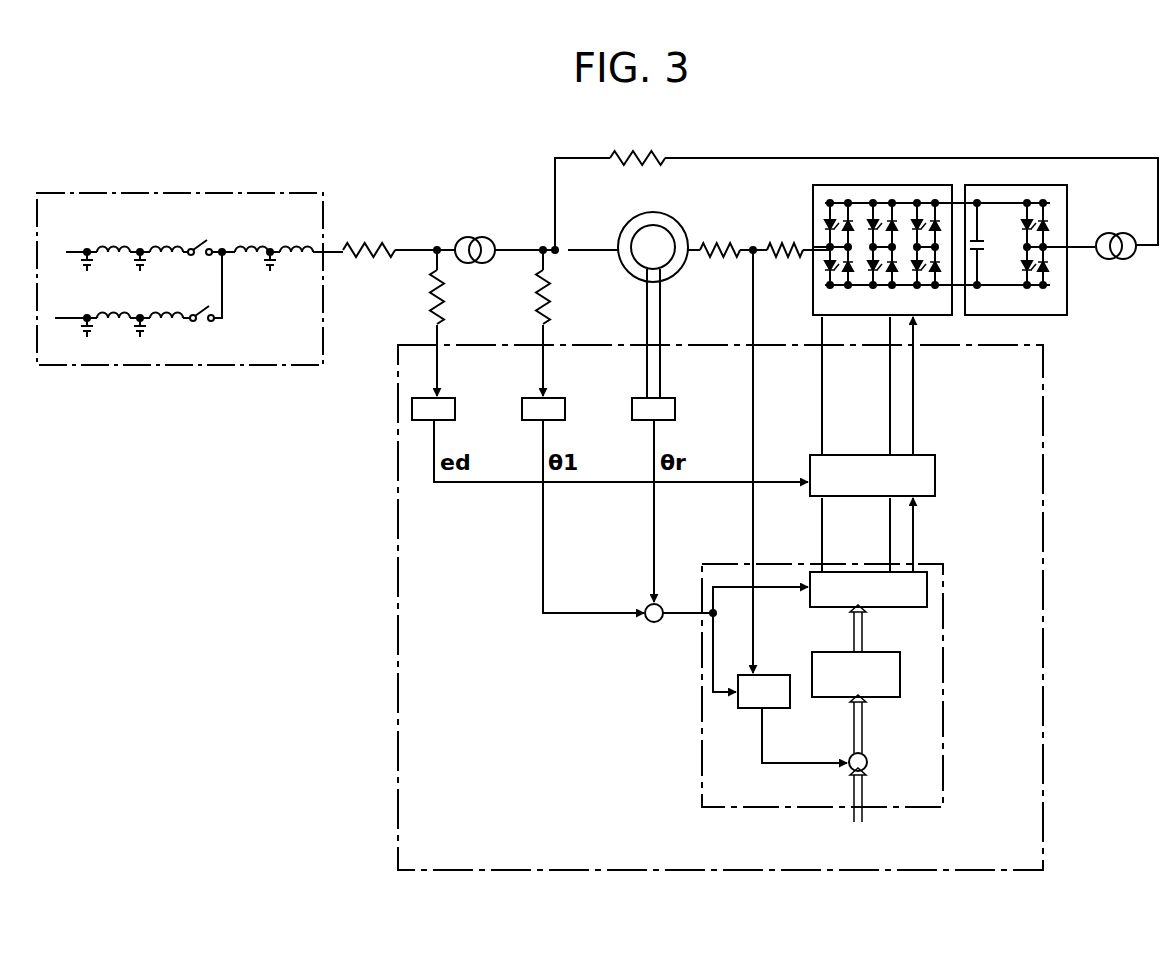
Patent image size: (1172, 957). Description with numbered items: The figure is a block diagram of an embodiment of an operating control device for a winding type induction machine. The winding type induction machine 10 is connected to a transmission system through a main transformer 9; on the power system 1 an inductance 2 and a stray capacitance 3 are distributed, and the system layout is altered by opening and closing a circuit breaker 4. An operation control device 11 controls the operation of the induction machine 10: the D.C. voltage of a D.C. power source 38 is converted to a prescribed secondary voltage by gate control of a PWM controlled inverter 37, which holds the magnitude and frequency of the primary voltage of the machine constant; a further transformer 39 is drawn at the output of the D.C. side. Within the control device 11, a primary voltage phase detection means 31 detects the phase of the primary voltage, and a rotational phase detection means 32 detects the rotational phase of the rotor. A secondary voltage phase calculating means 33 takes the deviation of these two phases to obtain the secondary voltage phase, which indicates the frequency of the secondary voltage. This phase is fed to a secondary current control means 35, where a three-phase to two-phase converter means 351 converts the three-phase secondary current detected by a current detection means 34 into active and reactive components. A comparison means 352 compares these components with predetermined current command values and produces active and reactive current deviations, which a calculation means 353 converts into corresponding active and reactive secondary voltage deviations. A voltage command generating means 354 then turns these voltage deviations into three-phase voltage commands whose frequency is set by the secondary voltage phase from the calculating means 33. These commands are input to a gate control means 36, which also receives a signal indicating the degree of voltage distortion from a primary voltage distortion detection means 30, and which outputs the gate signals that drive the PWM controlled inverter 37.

The power system 1 is at (183, 193).
The inductance 2 is at (120, 320).
The stray capacitance 3 is at (272, 273).
The circuit breaker 4 is at (198, 243).
The main transformer 9 is at (472, 238).
The winding type induction machine 10 is at (630, 218).
The operation control device 11 is at (1043, 601).
The primary voltage distortion detection means 30 is at (455, 412).
The primary voltage phase detection means 31 is at (581, 397).
The rotational phase detection means 32 is at (675, 412).
The secondary voltage phase calculating means 33 is at (650, 624).
The current detection means 34 is at (720, 246).
The secondary current control means 35 is at (745, 538).
The gate control means 36 is at (935, 485).
The PWM controlled inverter 37 is at (897, 185).
The D.C. power source 38 is at (1003, 185).
The transformer 39 is at (1114, 259).
The three-phase to two-phase converter means 351 is at (738, 700).
The comparison means 352 is at (867, 768).
The calculation means 353 is at (900, 677).
The voltage command generating means 354 is at (927, 592).